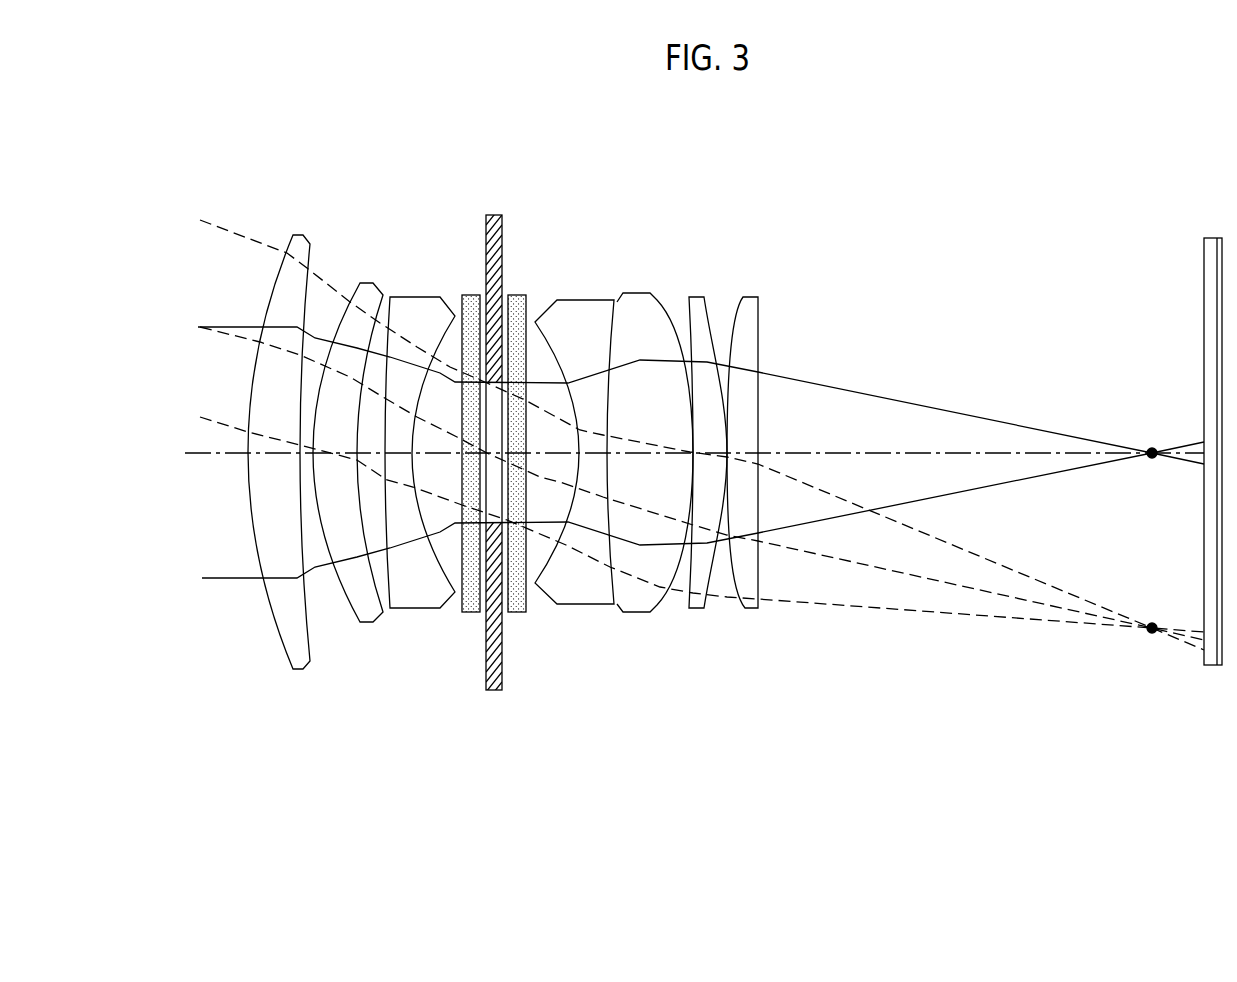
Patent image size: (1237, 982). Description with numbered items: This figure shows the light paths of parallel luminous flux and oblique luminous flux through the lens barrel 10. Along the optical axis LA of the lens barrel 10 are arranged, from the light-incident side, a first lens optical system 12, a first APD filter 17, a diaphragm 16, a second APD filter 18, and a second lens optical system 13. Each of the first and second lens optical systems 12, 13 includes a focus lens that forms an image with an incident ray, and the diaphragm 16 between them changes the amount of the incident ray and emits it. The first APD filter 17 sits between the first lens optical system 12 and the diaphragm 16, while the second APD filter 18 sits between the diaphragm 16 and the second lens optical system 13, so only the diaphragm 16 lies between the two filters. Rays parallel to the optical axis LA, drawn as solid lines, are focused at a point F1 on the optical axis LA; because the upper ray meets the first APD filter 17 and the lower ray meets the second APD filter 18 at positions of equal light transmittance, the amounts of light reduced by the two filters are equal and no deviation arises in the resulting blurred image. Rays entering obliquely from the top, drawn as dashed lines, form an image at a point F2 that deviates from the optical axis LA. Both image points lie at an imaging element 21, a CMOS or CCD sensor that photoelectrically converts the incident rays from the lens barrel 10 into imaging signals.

The lens barrel 10 is at (503, 498).
The first lens optical system 12 is at (455, 670).
The second lens optical system 13 is at (758, 670).
The diaphragm 16 is at (493, 215).
The first apodization filter 17 is at (472, 293).
The second apodization filter 18 is at (517, 293).
The imaging element 21 is at (1214, 238).
The image point of parallel luminous flux F1 is at (1152, 459).
The image point of oblique luminous flux F2 is at (1152, 634).
The optical axis LA is at (200, 456).